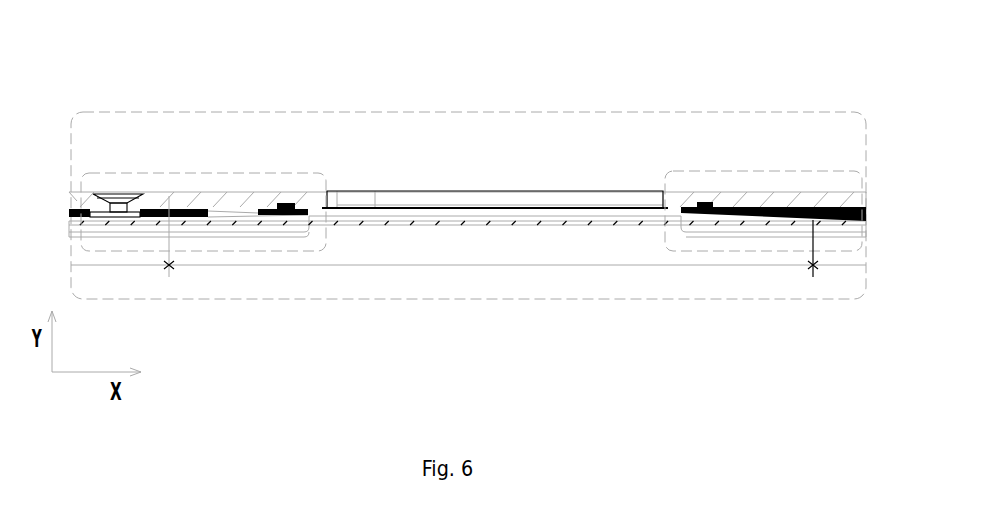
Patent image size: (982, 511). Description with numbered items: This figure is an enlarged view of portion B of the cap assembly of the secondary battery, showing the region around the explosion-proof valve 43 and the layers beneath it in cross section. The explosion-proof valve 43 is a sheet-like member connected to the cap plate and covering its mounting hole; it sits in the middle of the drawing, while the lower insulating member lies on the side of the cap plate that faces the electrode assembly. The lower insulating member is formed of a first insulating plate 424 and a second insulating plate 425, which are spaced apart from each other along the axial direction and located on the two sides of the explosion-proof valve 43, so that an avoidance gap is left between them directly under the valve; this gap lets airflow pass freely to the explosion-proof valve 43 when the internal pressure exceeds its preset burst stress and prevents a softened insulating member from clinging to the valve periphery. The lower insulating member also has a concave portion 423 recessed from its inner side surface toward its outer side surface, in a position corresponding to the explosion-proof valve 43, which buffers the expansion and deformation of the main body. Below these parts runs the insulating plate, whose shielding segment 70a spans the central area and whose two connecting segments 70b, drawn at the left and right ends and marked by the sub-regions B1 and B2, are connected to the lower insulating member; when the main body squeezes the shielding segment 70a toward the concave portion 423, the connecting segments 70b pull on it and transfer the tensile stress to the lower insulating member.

The portion B is at (487, 53).
The region B1 (left bending/edge region) B1 is at (326, 175).
The region B2 (right bending/edge region) B2 is at (665, 168).
The explosion-proof valve 43 is at (496, 207).
The concave portion 423 is at (577, 216).
The first insulating plate 424 is at (170, 209).
The second insulating plate 425 is at (757, 211).
The shielding segment 70a is at (491, 280).
The connecting segment 70b is at (468, 246).